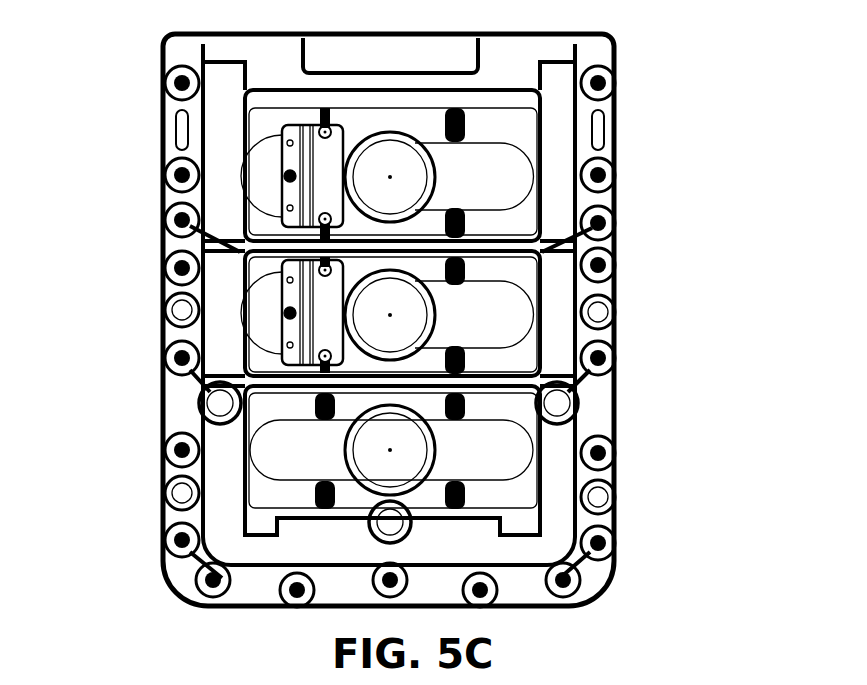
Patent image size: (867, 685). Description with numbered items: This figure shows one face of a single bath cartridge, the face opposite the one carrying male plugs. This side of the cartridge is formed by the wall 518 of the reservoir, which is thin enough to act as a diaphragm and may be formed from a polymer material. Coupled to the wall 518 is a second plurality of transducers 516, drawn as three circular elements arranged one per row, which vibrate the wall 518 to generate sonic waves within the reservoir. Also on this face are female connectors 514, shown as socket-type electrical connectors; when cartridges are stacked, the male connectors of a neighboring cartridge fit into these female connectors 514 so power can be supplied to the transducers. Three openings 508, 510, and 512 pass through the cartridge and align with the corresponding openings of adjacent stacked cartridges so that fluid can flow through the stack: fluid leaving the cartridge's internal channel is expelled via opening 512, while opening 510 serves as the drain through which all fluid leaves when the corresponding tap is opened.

The opening 508 is at (580, 403).
The opening 510 is at (372, 530).
The opening 512 is at (205, 410).
The female connectors 514 is at (285, 176).
The transducers 516 is at (417, 171).
The wall 518 is at (267, 120).